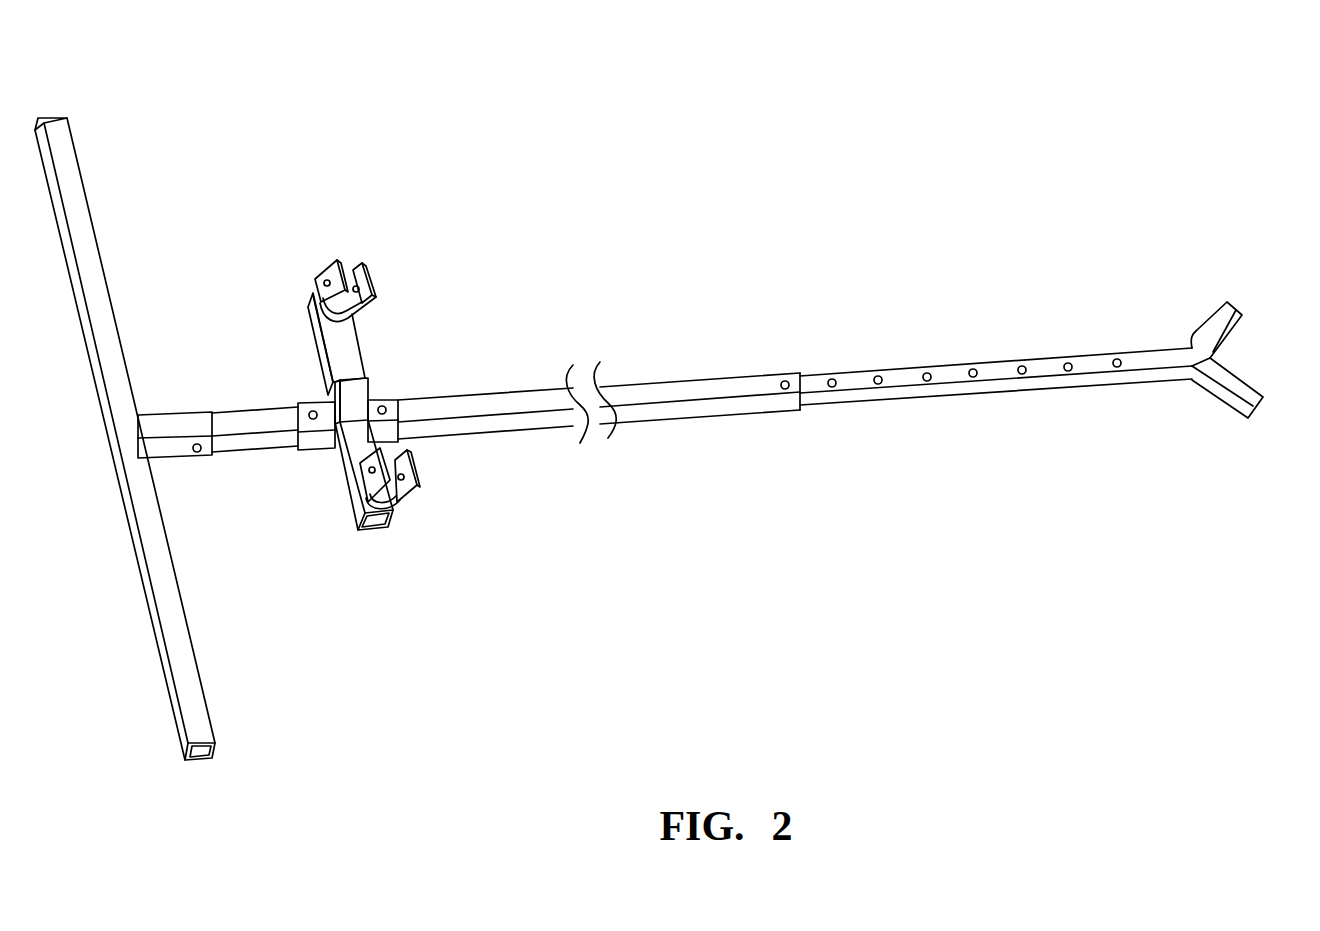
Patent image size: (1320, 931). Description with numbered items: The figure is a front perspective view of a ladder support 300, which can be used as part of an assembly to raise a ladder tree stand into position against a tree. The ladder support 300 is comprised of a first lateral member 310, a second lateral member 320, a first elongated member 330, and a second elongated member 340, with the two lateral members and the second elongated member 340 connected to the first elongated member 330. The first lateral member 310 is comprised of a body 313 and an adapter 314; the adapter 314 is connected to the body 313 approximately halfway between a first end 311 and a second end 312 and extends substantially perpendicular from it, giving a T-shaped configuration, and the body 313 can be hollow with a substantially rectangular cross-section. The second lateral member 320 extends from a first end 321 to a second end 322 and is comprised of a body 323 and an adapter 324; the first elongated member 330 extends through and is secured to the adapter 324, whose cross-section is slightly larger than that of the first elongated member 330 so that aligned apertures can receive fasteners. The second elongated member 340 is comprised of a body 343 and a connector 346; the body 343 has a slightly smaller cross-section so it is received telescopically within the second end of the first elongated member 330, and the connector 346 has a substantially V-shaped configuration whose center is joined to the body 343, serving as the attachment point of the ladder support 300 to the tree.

The ladder support 300 is at (672, 408).
The first lateral member 310 is at (158, 570).
The first end 311 is at (216, 756).
The second end 312 is at (52, 118).
The body 313 is at (87, 281).
The adapter 314 is at (189, 424).
The second lateral member 320 is at (354, 348).
The first end 321 is at (393, 525).
The second end 322 is at (306, 300).
The body 323 is at (358, 407).
The adapter 324 is at (338, 420).
The first elongated member 330 is at (472, 423).
The second elongated member 340 is at (958, 372).
The body 343 is at (860, 383).
The connector 346 is at (1213, 330).